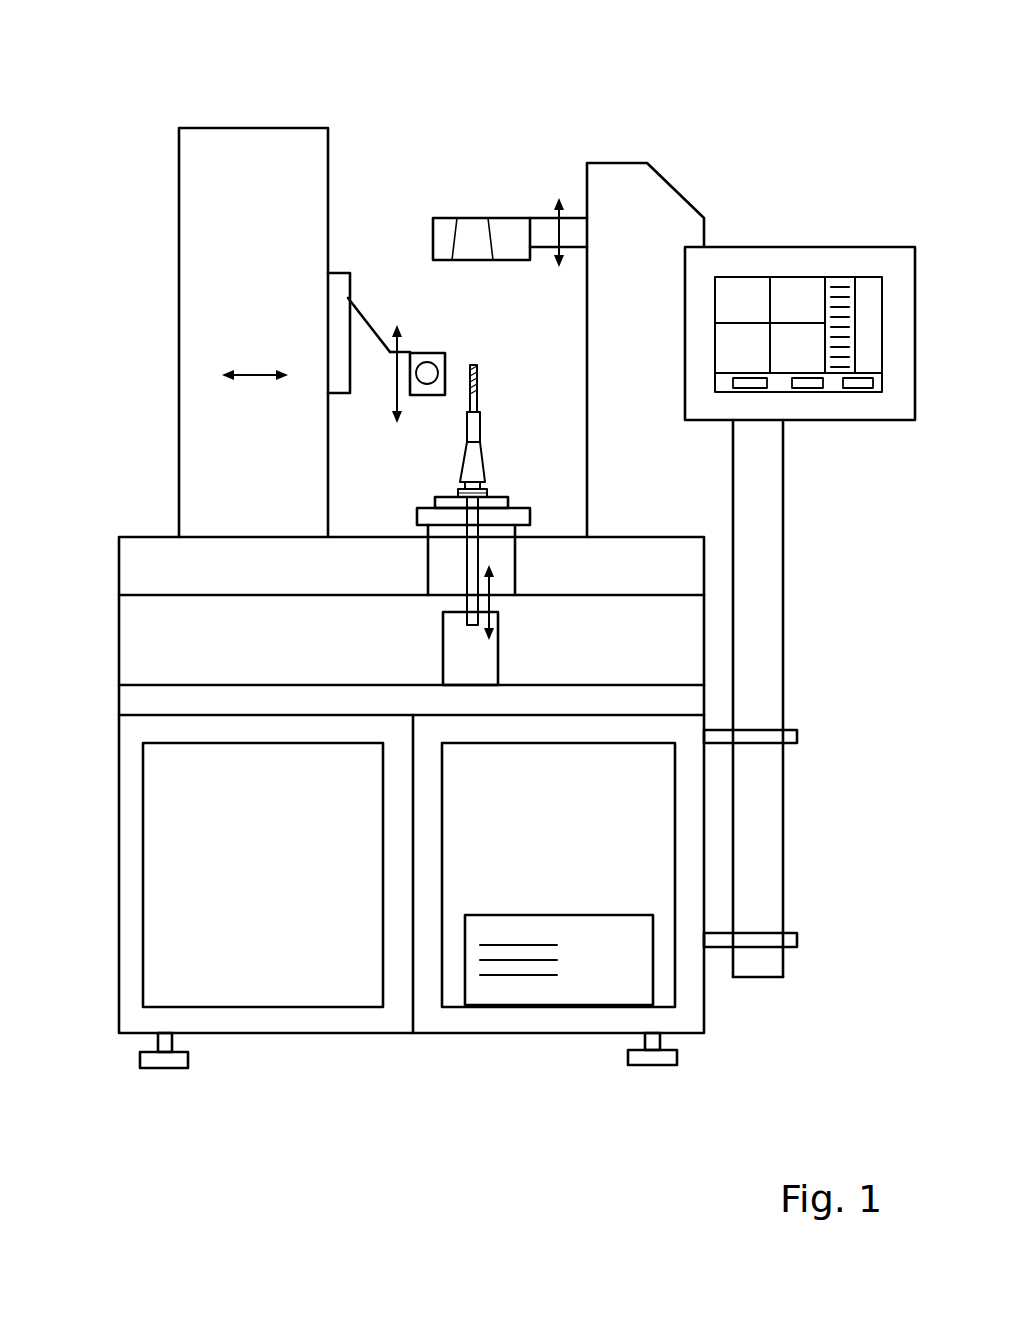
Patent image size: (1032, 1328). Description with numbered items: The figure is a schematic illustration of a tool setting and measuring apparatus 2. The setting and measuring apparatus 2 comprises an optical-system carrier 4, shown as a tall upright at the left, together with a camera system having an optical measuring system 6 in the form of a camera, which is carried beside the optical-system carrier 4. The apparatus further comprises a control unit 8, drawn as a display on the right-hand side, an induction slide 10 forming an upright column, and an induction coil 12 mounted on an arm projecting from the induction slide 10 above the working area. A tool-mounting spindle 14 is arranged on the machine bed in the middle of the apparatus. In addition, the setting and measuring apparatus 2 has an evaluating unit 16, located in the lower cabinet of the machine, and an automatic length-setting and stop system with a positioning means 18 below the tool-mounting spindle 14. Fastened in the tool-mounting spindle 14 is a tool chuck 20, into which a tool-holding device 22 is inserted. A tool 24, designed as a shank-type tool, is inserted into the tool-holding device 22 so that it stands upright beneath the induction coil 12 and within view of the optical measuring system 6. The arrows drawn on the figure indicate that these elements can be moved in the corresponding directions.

The setting and measuring apparatus 2 is at (147, 650).
The optical-system carrier 4 is at (358, 347).
The optical measuring system 6 is at (432, 363).
The control unit 8 is at (792, 260).
The induction slide 10 is at (622, 207).
The induction coil 12 is at (506, 232).
The tool-mounting spindle 14 is at (510, 520).
The evaluating unit 16 is at (587, 968).
The positioning means 18 is at (473, 548).
The tool chuck 20 is at (473, 463).
The tool-holding device 22 is at (483, 418).
The tool 24 is at (478, 375).